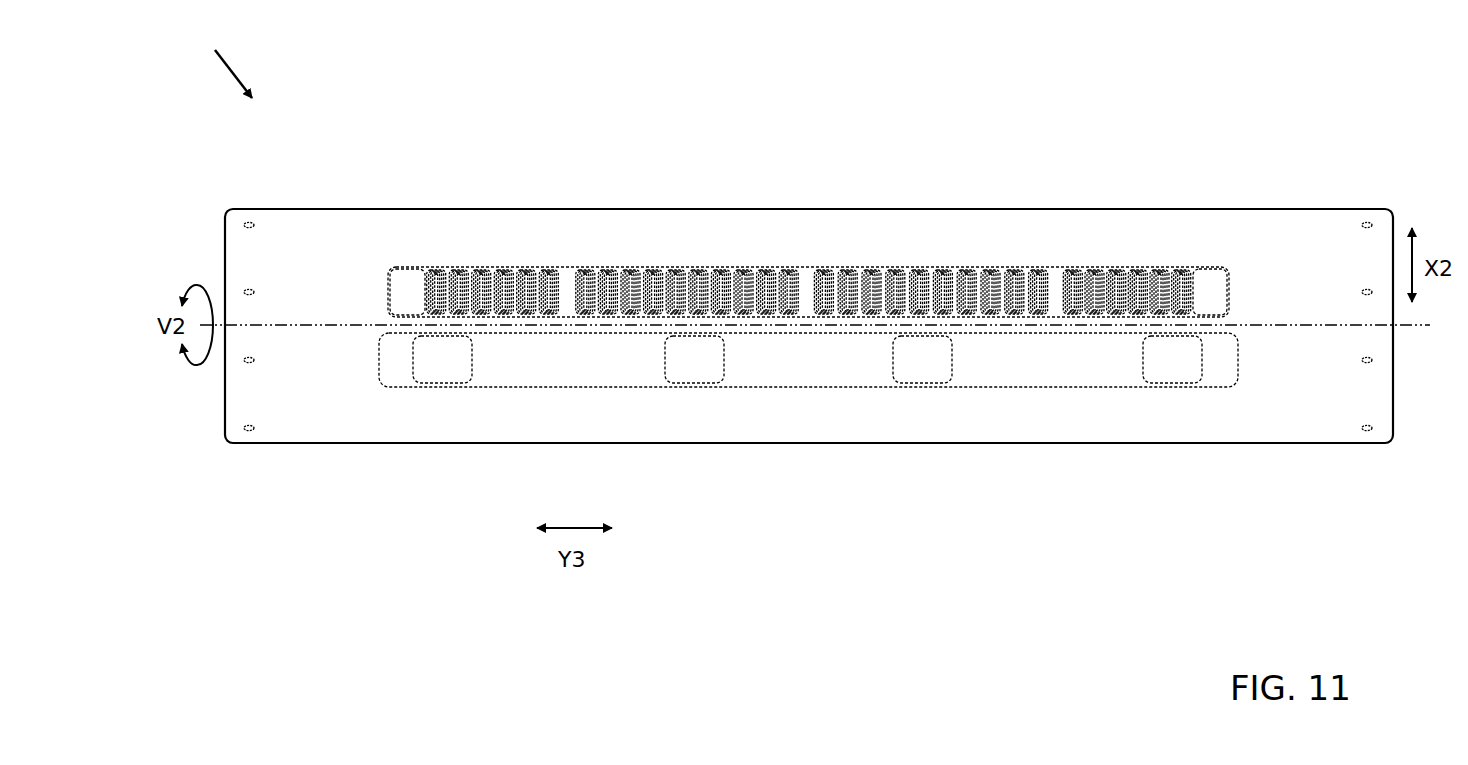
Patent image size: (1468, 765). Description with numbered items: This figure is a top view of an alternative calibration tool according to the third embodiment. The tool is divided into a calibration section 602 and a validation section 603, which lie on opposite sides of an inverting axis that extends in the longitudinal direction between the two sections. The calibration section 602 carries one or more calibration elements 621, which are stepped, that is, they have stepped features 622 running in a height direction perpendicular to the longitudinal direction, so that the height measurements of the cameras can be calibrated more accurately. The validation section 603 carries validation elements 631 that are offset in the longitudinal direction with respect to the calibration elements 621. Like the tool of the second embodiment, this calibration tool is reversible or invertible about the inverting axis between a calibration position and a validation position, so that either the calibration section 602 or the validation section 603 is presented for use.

The calibration section 602 is at (150, 208).
The validation section 603 is at (150, 336).
The calibration element 621 is at (565, 268).
The stepped feature 622 is at (589, 268).
The validation element 631 is at (447, 372).